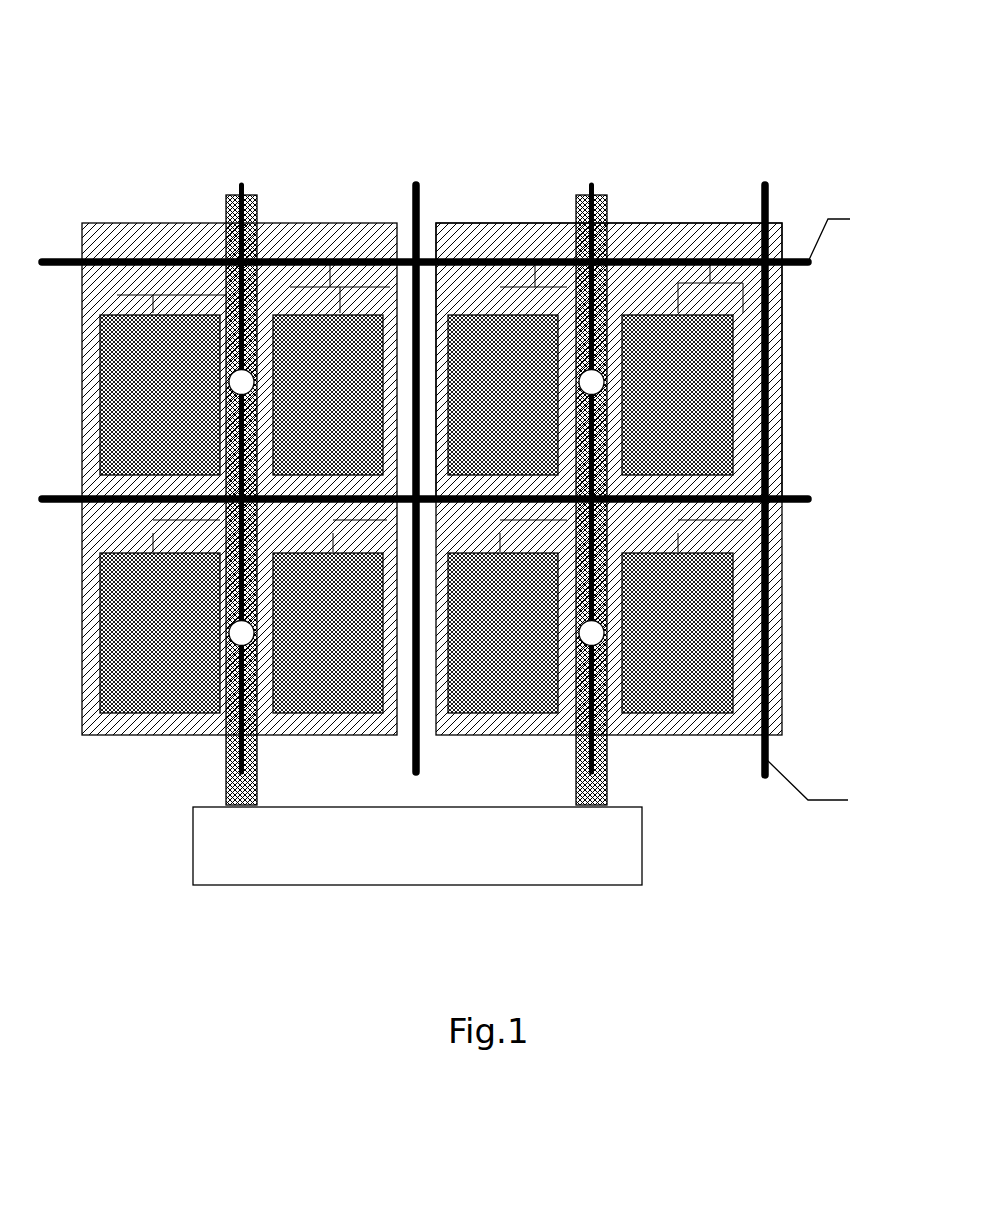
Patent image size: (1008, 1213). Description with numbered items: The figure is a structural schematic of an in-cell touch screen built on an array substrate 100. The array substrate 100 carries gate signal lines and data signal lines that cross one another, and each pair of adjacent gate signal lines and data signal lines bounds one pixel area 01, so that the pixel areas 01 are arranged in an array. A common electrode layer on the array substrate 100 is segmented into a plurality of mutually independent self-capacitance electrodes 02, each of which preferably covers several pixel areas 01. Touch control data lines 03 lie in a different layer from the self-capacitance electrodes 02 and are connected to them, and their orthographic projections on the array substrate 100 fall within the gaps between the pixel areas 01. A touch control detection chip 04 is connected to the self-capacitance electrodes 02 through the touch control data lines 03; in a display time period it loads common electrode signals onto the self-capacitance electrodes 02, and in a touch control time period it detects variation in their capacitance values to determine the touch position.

The array substrate 100 is at (442, 108).
The pixel area 01 is at (680, 735).
The self-capacitance electrode 02 is at (630, 223).
The touch control data line 03 is at (258, 222).
The touch control detection chip 04 is at (613, 887).